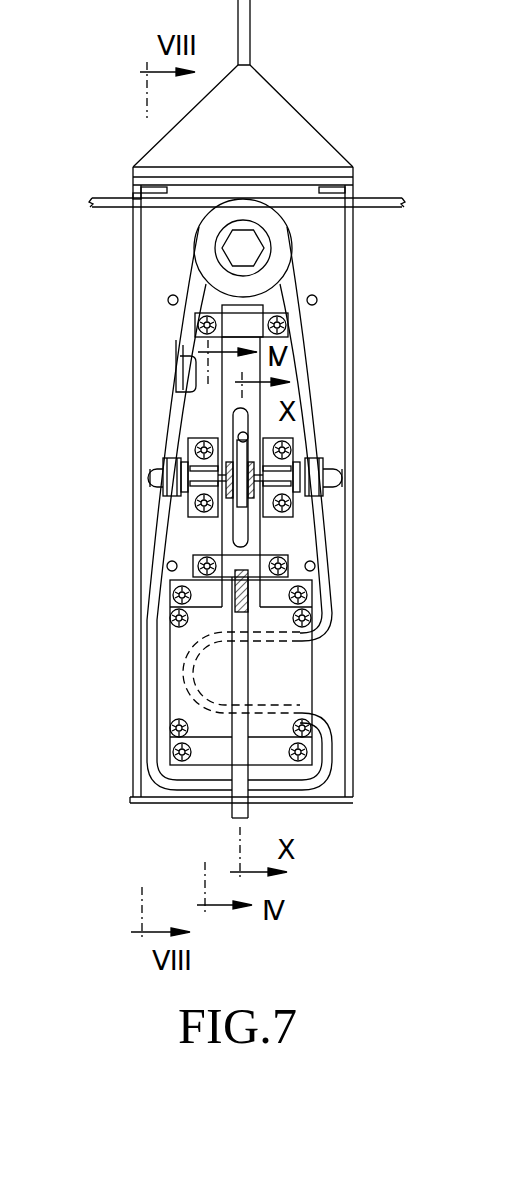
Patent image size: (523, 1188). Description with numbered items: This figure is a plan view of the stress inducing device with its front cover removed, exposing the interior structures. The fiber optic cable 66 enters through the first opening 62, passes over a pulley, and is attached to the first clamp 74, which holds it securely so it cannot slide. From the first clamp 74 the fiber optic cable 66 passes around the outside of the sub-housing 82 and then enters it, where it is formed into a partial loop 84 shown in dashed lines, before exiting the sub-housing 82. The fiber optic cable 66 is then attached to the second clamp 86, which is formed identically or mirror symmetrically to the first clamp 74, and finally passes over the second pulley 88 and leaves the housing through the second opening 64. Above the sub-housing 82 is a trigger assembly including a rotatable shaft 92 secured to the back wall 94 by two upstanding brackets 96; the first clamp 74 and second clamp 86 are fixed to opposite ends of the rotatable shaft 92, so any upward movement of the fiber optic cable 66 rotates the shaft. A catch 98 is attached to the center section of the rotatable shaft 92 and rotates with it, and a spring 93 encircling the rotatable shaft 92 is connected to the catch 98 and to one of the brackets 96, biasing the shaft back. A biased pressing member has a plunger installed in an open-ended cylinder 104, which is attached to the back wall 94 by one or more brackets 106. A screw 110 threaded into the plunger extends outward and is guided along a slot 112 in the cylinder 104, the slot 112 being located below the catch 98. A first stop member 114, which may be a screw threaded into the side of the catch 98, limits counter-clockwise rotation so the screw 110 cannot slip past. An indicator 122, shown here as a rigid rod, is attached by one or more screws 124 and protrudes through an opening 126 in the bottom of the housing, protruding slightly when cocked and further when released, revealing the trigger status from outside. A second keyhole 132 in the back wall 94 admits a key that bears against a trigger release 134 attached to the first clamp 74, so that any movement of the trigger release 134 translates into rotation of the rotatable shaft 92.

The first opening 62 is at (350, 192).
The second opening 64 is at (134, 198).
The fiber optic cable 66 is at (396, 200).
The first clamp 74 is at (174, 470).
The sub-housing 82 is at (293, 697).
The partial loop 84 is at (193, 673).
The second clamp 86 is at (300, 468).
The second pulley 88 is at (200, 228).
The rotatable shaft 92 is at (180, 498).
The spring 93 is at (197, 482).
The back wall 94 is at (173, 286).
The upstanding brackets 96 is at (203, 447).
The catch 98 is at (287, 503).
The cylinder 104 is at (288, 325).
The brackets 106 is at (252, 323).
The screw 110 is at (235, 433).
The slot 112 is at (238, 545).
The first stop member 114 is at (297, 483).
The indicator 122 is at (250, 785).
The screws 124 is at (258, 606).
The opening 126 is at (232, 808).
The second keyhole 132 is at (185, 365).
The trigger release 134 is at (183, 360).